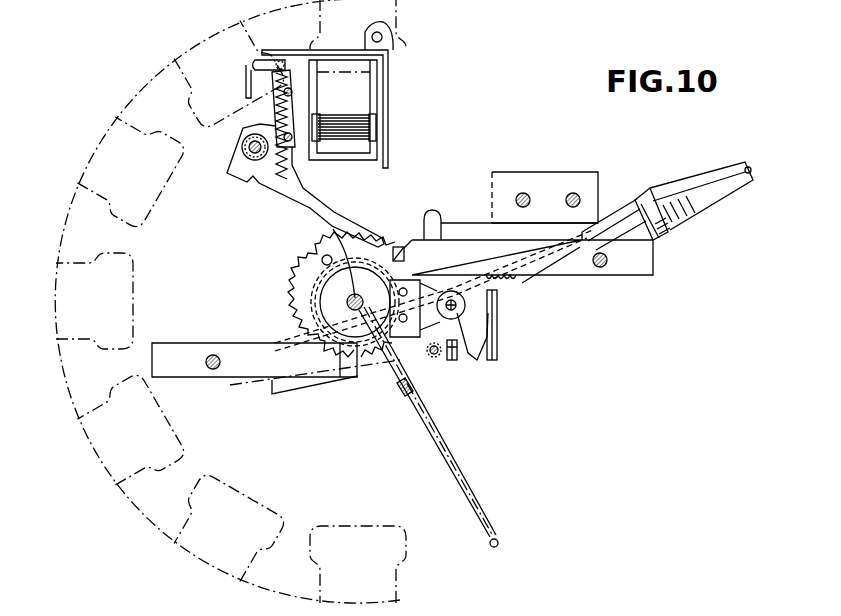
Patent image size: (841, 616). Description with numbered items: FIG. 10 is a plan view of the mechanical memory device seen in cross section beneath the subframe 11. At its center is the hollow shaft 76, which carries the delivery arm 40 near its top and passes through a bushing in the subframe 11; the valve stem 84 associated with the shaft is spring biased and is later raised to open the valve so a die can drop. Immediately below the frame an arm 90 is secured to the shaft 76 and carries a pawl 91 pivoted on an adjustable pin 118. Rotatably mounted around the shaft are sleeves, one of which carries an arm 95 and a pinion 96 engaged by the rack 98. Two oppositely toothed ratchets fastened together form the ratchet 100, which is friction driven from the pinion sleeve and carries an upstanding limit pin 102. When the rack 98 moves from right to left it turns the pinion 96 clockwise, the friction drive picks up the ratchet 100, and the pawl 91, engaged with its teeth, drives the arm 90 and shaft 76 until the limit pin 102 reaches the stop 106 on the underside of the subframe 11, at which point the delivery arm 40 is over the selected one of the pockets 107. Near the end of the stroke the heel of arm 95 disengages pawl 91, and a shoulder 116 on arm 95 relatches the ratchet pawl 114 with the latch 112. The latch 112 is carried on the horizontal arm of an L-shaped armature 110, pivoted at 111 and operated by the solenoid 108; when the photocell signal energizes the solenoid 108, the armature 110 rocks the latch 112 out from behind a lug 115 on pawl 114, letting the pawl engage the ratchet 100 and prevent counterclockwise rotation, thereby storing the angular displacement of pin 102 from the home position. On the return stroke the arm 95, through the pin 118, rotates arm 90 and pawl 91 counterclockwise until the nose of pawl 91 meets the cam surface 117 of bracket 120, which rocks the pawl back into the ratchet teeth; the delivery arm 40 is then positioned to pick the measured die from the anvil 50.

The subframe 11 is at (170, 300).
The delivery arm 40 is at (460, 472).
The anvil 50 is at (501, 536).
The hollow shaft 76 is at (348, 304).
The valve stem 84 is at (332, 256).
The arm 90 is at (399, 251).
The pawl 91 is at (401, 246).
The arm 95 is at (481, 355).
The pinion 96 is at (310, 295).
The rack 98 is at (506, 283).
The ratchet 100 is at (315, 275).
The limit pin 102 is at (323, 257).
The stop 106 is at (618, 268).
The pockets 107 is at (296, 508).
The solenoid 108 is at (349, 107).
The L-shaped armature 110 is at (385, 130).
The pivot 111 is at (382, 38).
The latch 112 is at (257, 62).
The ratchet pawl 114 is at (292, 188).
The lug 115 is at (246, 88).
The shoulder 116 is at (497, 334).
The cam surface 117 is at (432, 238).
The adjustable pin 118 is at (437, 358).
The bracket 120 is at (537, 187).